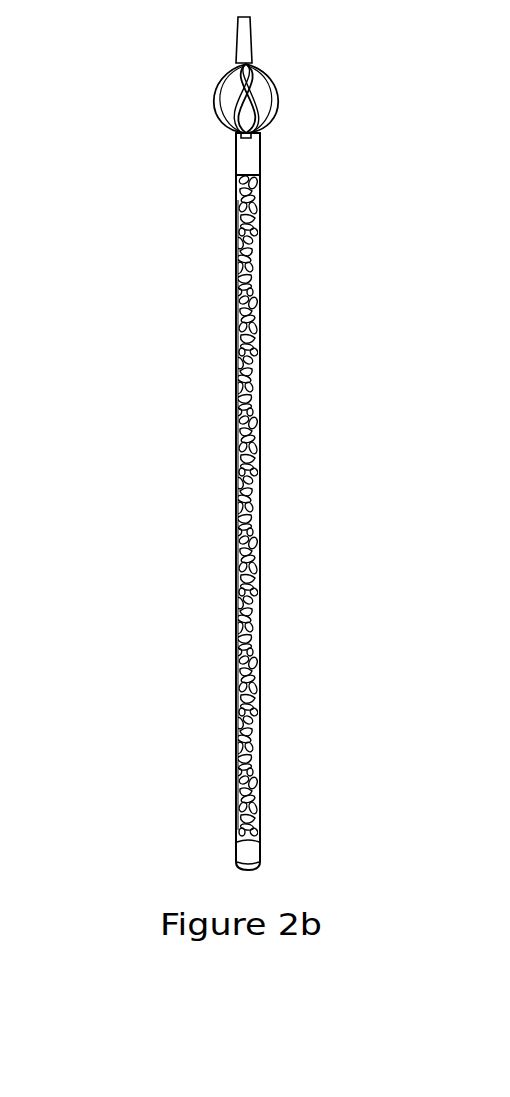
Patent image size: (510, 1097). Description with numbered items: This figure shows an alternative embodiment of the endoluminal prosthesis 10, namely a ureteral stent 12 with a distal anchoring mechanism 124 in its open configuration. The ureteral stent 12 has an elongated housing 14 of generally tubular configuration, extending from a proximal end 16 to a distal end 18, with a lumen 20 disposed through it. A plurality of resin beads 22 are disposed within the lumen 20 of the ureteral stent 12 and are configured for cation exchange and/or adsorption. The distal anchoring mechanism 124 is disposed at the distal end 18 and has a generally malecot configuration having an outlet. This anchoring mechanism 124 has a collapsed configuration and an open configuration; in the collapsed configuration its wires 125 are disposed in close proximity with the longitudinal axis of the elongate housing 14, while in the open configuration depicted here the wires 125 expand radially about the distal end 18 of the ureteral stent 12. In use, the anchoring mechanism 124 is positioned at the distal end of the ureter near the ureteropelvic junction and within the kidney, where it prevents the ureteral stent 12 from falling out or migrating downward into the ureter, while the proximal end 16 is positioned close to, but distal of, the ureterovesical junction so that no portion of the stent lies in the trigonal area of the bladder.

The prosthesis 10 is at (80, 165).
The ureteral stent 12 is at (258, 404).
The elongated housing 14 is at (240, 505).
The proximal end 16 is at (245, 857).
The distal end 18 is at (233, 133).
The lumen 20 is at (252, 156).
The resin beads 22 is at (259, 677).
The distal anchoring mechanism 124 is at (264, 95).
The wires 125 is at (233, 75).